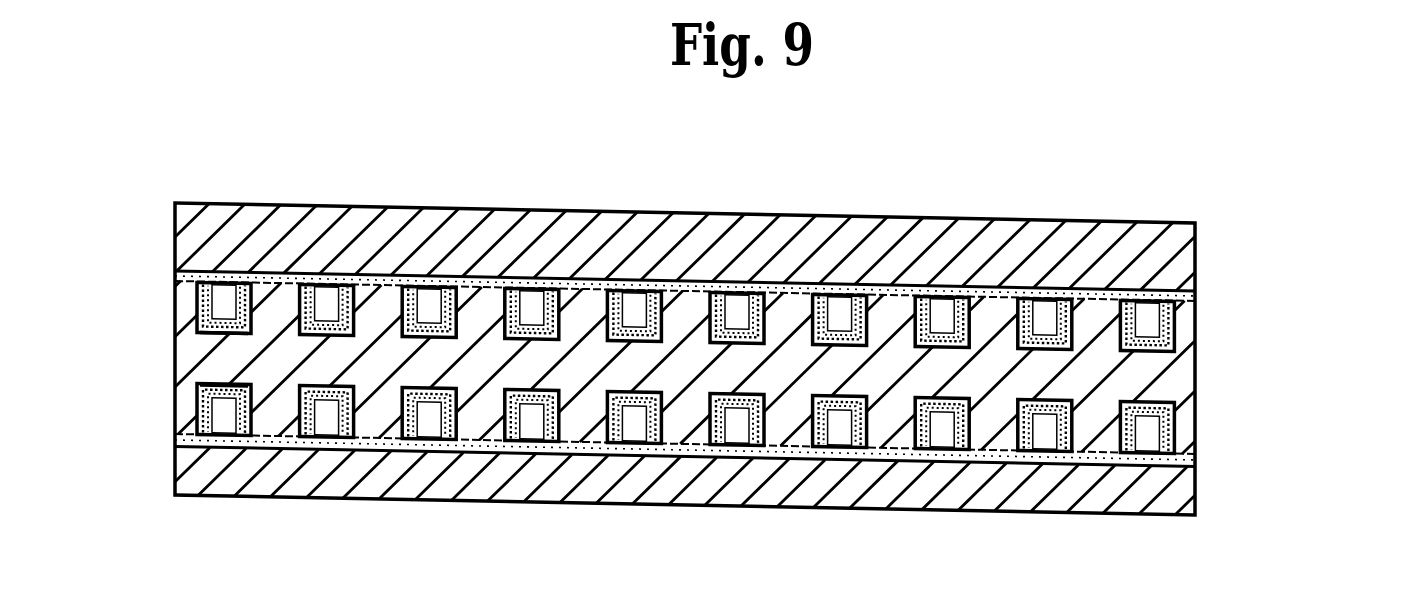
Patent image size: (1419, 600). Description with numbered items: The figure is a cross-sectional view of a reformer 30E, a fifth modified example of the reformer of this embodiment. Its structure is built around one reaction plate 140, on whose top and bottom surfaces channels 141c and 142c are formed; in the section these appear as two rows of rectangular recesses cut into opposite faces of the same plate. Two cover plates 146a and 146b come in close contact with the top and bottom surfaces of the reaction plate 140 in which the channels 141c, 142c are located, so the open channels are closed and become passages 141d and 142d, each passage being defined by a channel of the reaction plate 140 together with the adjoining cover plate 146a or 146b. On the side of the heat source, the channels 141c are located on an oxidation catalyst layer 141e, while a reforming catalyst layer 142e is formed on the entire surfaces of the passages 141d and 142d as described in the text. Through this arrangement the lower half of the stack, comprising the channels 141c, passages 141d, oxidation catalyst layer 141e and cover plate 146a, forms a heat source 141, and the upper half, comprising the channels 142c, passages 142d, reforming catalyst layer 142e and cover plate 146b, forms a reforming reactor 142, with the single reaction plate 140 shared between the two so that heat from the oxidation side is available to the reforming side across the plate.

The reformer 30E is at (1245, 181).
The cover plate 146b is at (178, 228).
The reaction plate 140 is at (177, 306).
The reforming reactor 142 is at (1320, 318).
The reforming catalyst layer 142e is at (1188, 303).
The passages 142d is at (1187, 317).
The channels 142c is at (213, 341).
The heat source 141 is at (1318, 433).
The oxidation catalyst layer 141e is at (1190, 457).
The passages 141d is at (1187, 428).
The channels 141c is at (208, 377).
The cover plate 146a is at (178, 460).